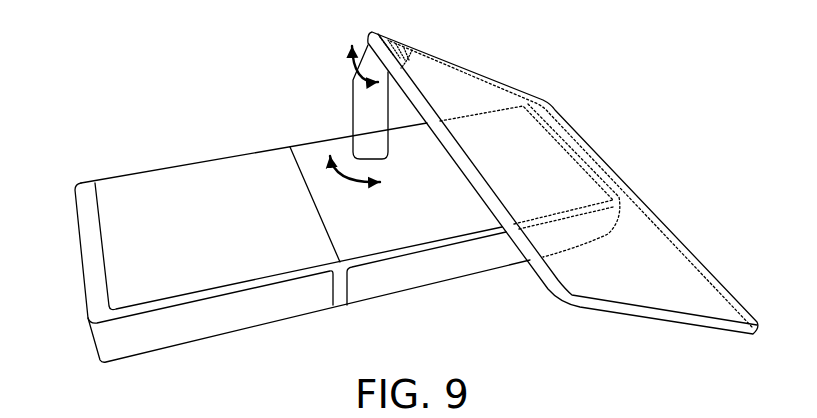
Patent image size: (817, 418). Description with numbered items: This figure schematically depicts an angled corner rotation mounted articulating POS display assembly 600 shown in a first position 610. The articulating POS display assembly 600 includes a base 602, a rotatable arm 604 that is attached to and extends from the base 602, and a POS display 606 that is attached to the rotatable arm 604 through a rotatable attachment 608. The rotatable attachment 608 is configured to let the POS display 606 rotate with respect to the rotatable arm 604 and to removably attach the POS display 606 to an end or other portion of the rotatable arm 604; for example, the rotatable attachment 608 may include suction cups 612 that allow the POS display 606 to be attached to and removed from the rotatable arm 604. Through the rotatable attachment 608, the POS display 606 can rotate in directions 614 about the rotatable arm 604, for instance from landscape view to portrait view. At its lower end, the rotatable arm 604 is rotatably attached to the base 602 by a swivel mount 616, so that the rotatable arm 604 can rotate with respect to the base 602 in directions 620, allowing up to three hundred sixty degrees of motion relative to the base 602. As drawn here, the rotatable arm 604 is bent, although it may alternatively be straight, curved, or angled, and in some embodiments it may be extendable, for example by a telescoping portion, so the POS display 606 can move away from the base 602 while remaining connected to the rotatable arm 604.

The angled corner rotation mounted articulating POS display assembly 600 is at (591, 53).
The base 602 is at (312, 153).
The rotatable arm 604 is at (362, 126).
The POS display 606 is at (454, 90).
The rotatable attachment 608 is at (366, 31).
The first position 610 is at (707, 101).
The suction cups 612 is at (375, 34).
The directions 614 is at (351, 62).
The swivel mount 616 is at (391, 163).
The directions 620 is at (356, 184).